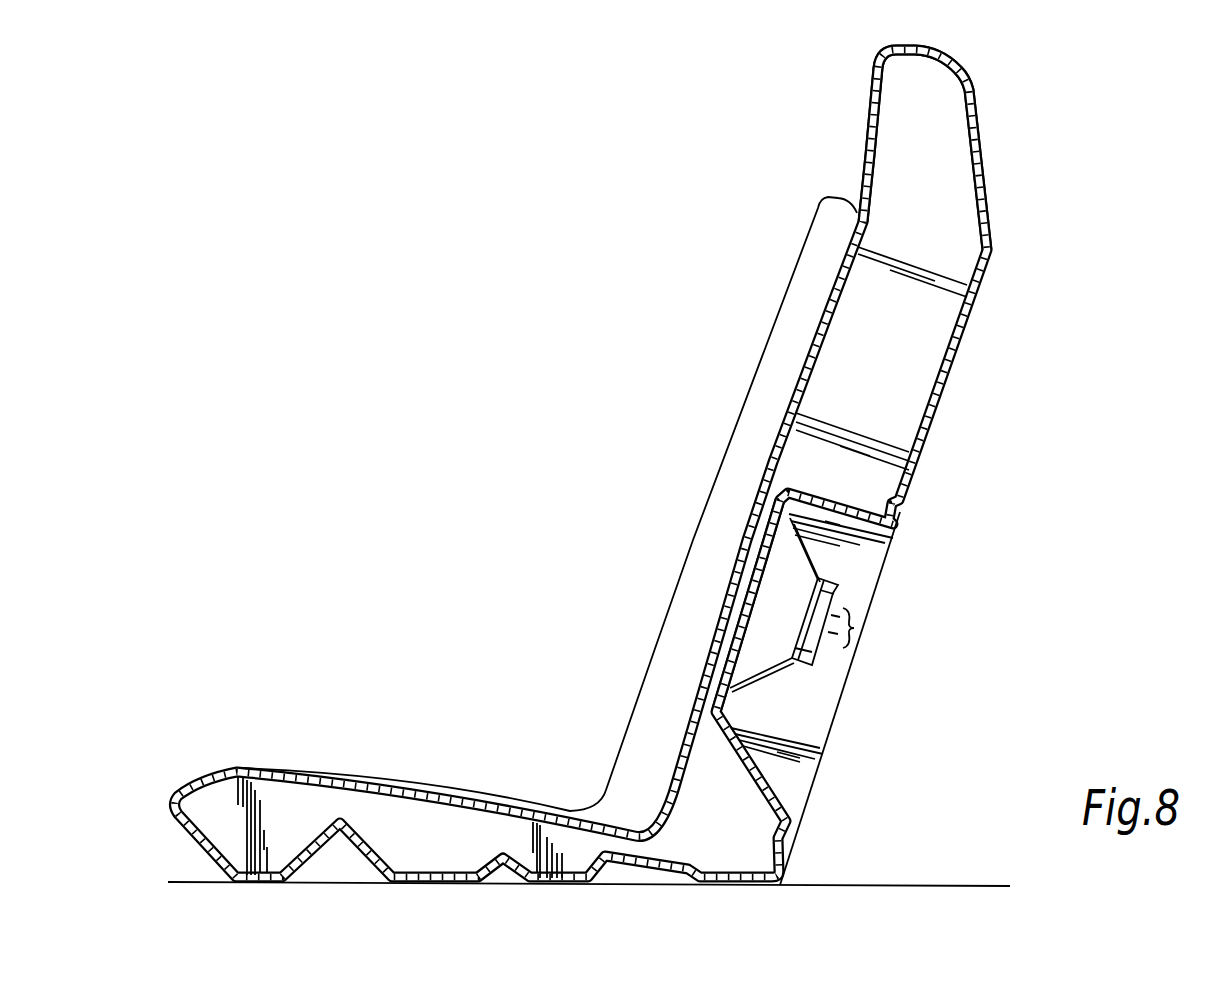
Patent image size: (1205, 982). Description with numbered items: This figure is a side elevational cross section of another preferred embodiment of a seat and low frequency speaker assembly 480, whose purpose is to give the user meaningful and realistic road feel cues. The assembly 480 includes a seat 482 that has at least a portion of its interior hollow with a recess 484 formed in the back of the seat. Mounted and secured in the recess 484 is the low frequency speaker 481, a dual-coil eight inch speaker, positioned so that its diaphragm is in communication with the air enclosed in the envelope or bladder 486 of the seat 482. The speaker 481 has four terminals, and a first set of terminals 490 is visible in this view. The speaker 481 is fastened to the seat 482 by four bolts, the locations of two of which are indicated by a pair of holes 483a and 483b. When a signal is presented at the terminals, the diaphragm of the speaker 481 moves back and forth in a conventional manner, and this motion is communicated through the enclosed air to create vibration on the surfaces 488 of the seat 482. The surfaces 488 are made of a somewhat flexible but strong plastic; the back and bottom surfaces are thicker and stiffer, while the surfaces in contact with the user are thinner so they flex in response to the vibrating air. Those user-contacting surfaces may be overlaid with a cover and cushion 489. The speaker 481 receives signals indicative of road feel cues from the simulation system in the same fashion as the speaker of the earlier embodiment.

The seat and low frequency speaker assembly 480 is at (683, 467).
The low frequency speaker 481 is at (812, 667).
The seat 482 is at (975, 343).
The hole 483a is at (762, 542).
The hole 483b is at (732, 652).
The recess 484 is at (853, 584).
The envelope or bladder 486 is at (908, 338).
The surfaces 488 is at (868, 107).
The cover and cushion 489 is at (796, 265).
The first set of terminals 490 is at (855, 630).